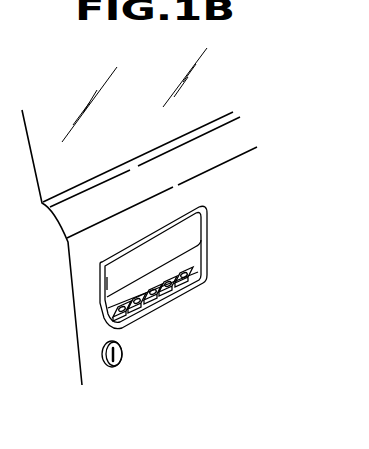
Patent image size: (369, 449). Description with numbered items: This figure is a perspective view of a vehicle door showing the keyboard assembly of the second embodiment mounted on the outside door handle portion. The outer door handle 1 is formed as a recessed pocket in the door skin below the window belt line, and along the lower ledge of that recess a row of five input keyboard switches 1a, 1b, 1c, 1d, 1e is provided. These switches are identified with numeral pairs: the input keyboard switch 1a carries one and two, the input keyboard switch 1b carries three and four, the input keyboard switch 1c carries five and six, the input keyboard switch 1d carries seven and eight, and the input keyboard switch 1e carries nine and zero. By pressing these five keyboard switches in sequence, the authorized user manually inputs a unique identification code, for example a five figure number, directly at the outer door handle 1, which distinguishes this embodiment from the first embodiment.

The outer door handle 1 is at (193, 233).
The input keyboard switch 1a is at (133, 322).
The input keyboard switch 1b is at (152, 312).
The input keyboard switch 1c is at (167, 301).
The input keyboard switch 1d is at (186, 289).
The input keyboard switch 1e is at (197, 279).